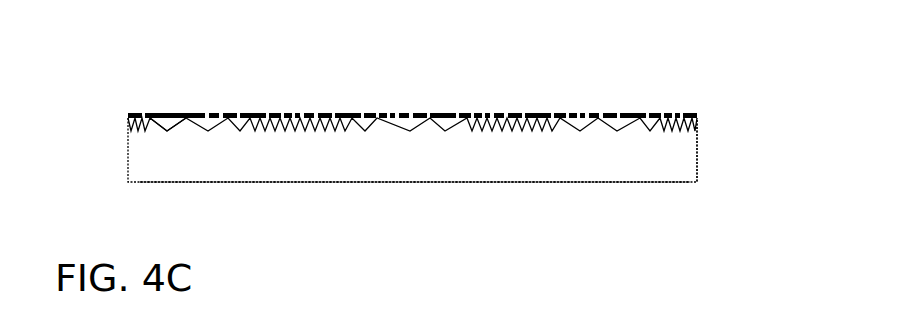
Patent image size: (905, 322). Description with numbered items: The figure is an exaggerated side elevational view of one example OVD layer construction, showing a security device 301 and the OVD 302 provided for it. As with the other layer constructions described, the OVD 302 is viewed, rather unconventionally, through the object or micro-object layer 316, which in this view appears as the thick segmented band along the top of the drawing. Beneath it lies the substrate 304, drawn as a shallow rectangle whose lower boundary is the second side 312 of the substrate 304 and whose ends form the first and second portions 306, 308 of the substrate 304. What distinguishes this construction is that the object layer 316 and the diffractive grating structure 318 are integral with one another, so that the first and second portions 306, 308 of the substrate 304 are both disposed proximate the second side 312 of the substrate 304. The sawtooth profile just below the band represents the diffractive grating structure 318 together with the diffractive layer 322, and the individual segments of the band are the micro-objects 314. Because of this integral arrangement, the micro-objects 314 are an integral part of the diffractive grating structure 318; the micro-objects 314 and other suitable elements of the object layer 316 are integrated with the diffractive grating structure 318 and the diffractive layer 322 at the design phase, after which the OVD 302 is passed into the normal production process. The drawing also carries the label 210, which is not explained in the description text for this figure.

The security device 301 is at (433, 228).
The OVD 302 is at (645, 90).
The substrate 304 is at (135, 133).
The first portion of substrate 306 is at (702, 115).
The second portion of substrate 308 is at (701, 175).
The second side of substrate 312 is at (227, 183).
The micro-objects 314 is at (190, 113).
The object layer 316 is at (138, 110).
The diffractive grating structure 318 is at (357, 113).
The diffractive layer 322 is at (167, 132).
The patterned layer 210 is at (193, 83).